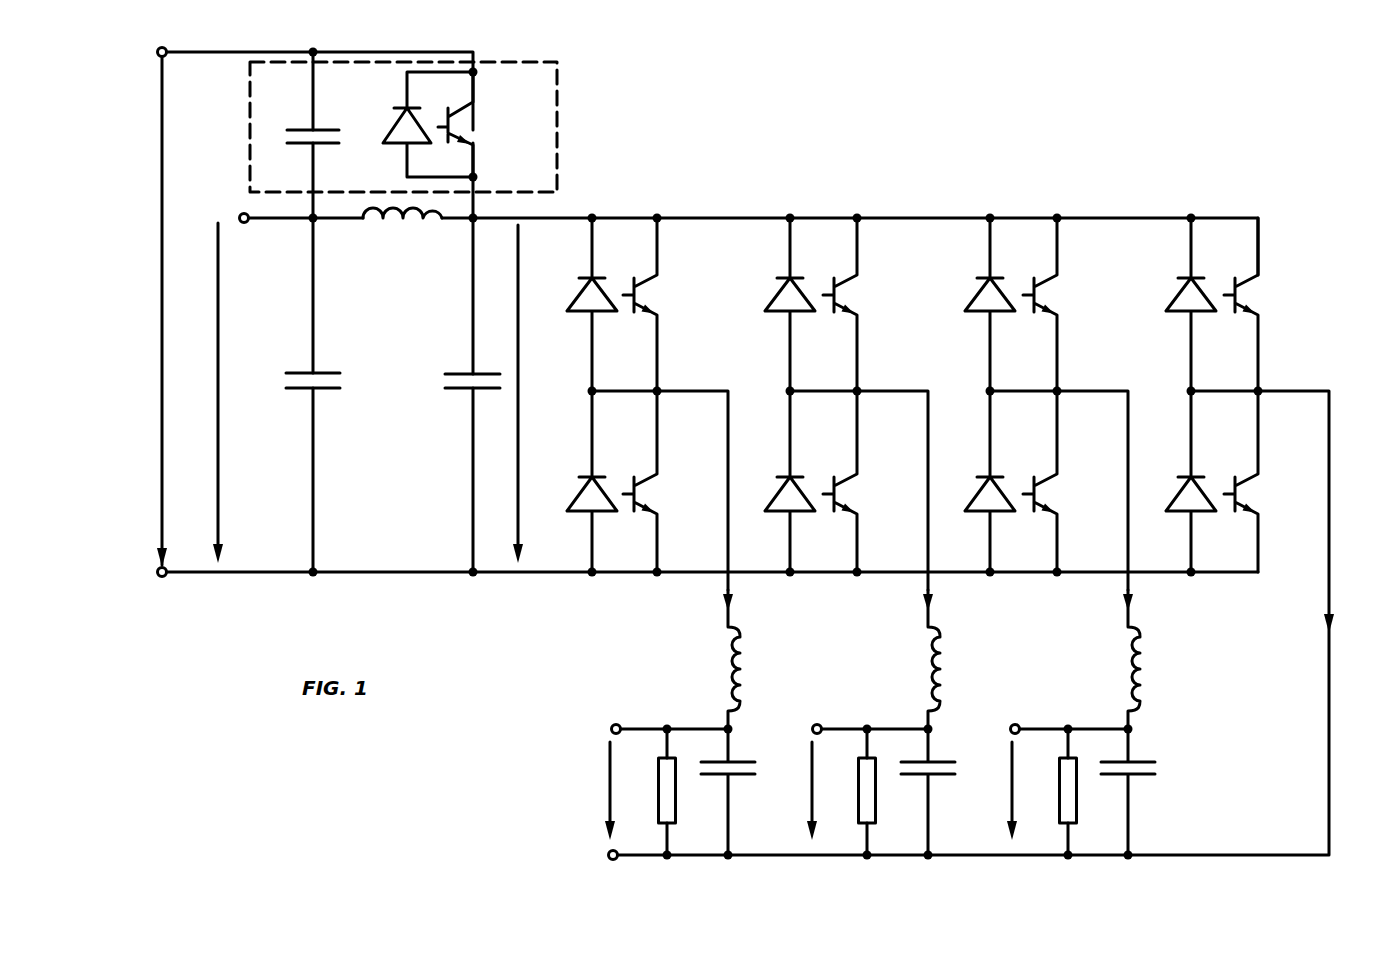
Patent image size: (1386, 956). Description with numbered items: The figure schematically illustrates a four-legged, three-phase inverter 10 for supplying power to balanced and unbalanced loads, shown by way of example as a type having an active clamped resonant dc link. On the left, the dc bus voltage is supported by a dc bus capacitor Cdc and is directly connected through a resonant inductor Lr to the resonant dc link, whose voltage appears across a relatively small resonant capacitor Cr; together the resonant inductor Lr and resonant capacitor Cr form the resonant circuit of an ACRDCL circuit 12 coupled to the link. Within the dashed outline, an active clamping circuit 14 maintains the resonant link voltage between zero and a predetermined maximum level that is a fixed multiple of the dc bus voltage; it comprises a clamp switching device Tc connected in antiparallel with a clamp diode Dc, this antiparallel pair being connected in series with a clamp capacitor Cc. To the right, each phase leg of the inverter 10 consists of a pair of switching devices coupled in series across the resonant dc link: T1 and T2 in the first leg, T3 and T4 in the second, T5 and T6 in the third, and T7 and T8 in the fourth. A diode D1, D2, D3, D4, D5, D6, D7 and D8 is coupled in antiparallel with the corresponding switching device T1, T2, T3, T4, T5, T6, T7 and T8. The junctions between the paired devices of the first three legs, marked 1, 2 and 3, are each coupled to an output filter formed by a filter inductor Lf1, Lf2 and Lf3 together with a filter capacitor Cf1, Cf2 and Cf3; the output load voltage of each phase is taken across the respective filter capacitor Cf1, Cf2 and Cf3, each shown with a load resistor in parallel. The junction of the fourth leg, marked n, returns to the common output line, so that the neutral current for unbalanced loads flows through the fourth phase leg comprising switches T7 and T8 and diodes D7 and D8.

The four-legged, three-phase inverter 10 is at (1009, 118).
The ACRDCL circuit 12 is at (582, 96).
The active clamping circuit 14 is at (263, 136).
The clamp capacitor Cc is at (303, 120).
The clamp diode Dc is at (392, 128).
The clamp switching device Tc is at (467, 110).
The resonant inductor Lr is at (421, 230).
The dc bus capacitor Cdc is at (328, 374).
The resonant capacitor Cr is at (453, 373).
The diode D1 is at (578, 288).
The diode D2 is at (581, 487).
The diode D3 is at (778, 288).
The diode D4 is at (779, 487).
The diode D5 is at (978, 288).
The diode D6 is at (979, 487).
The diode D7 is at (1177, 288).
The diode D8 is at (1178, 487).
The switching device T1 is at (657, 284).
The switching device T2 is at (660, 484).
The switching device T3 is at (857, 284).
The switching device T4 is at (860, 484).
The switching device T5 is at (1057, 284).
The switching device T6 is at (1060, 484).
The switching device T7 is at (1258, 284).
The switching device T8 is at (1261, 484).
The output phase node 1 is at (647, 485).
The output phase node 2 is at (846, 485).
The output phase node 3 is at (1045, 486).
The output phase node n is at (989, 618).
The filter inductor Lf1 is at (720, 650).
The filter inductor Lf2 is at (920, 650).
The filter inductor Lf3 is at (1120, 650).
The filter capacitor Cf1 is at (736, 762).
The filter capacitor Cf2 is at (936, 762).
The filter capacitor Cf3 is at (1142, 762).